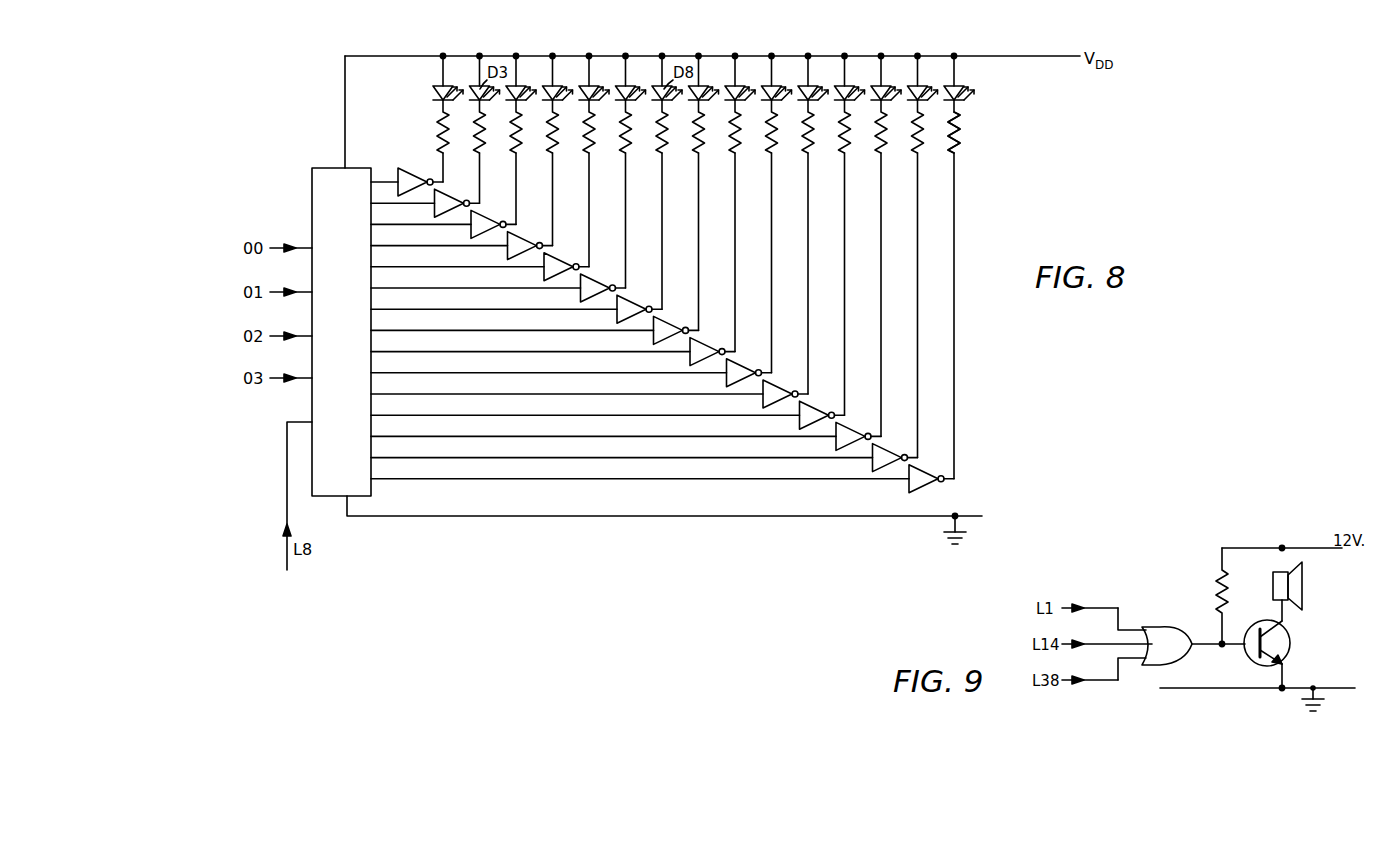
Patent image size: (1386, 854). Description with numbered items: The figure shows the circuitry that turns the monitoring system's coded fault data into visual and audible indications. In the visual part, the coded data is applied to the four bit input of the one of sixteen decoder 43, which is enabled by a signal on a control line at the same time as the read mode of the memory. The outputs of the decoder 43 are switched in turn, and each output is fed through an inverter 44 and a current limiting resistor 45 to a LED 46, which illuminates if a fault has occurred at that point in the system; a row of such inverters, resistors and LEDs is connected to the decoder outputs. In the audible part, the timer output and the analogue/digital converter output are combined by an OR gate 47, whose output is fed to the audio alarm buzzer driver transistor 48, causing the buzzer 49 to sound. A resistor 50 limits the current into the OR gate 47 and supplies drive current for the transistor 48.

In FIG. 8, the one of sixteen decoder 43 is at (352, 417).
In FIG. 8, the inverter 44 is at (936, 488).
In FIG. 8, the current limiting resistor 45 is at (962, 138).
In FIG. 8, the LED 46 is at (962, 88).
In FIG. 9, the OR gate 47 is at (1167, 646).
In FIG. 9, the audio alarm buzzer driver transistor 48 is at (1291, 650).
In FIG. 9, the buzzer 49 is at (1306, 590).
In FIG. 9, the resistor 50 is at (1218, 590).